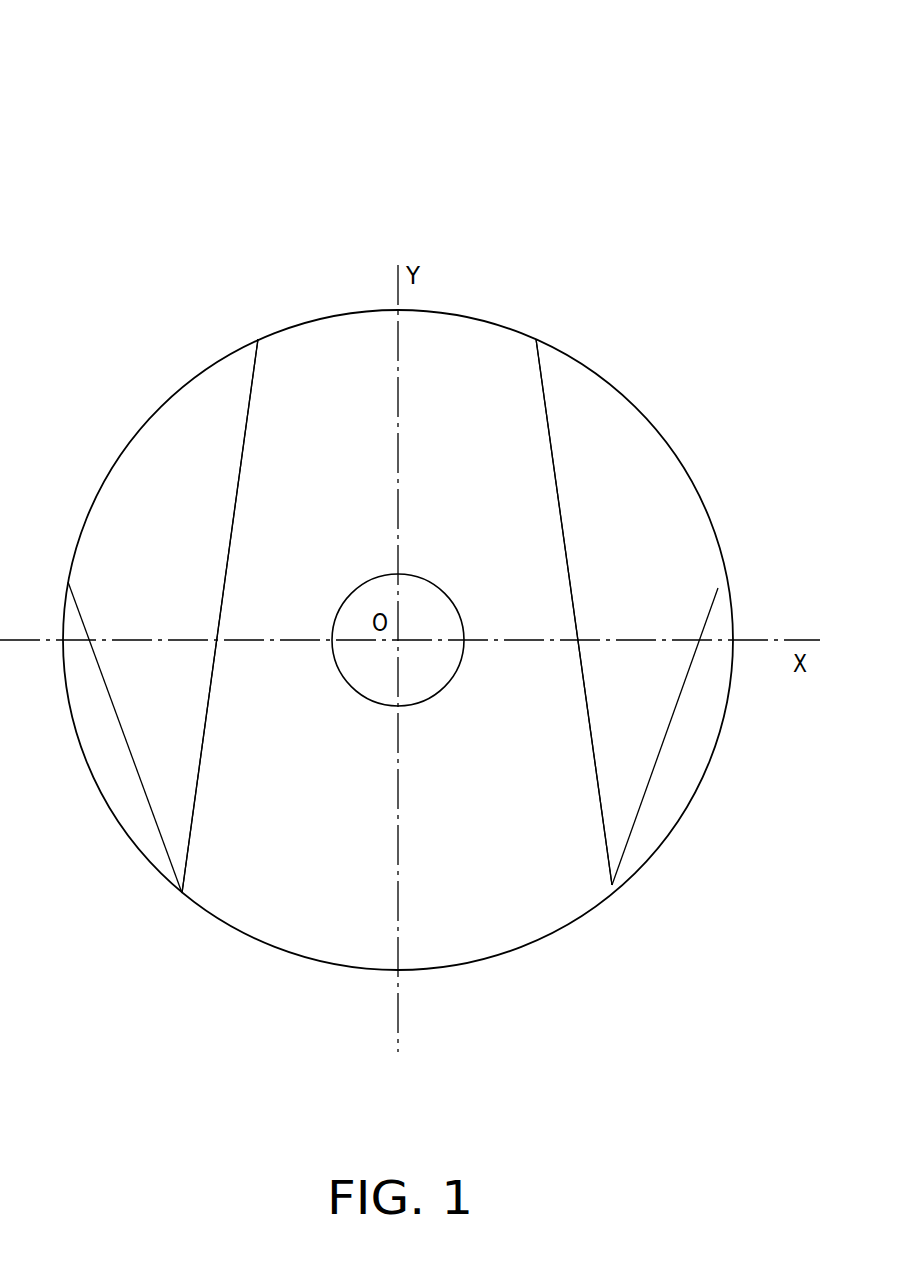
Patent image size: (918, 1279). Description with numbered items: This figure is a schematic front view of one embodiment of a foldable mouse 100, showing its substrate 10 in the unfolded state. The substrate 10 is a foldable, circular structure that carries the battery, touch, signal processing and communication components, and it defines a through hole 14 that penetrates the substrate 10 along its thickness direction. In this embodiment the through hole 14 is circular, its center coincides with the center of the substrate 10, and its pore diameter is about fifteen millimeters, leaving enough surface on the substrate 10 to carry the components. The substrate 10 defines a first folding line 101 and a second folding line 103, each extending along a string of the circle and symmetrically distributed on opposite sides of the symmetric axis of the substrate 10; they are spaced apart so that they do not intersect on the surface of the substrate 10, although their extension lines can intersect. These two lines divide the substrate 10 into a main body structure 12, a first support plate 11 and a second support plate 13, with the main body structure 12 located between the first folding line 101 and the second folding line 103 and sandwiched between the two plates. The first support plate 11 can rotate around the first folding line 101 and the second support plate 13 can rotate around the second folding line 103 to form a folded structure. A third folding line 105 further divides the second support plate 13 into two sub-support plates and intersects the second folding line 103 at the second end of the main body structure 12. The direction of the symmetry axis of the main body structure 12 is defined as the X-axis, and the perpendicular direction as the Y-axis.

The foldable mouse 100 is at (216, 30).
The substrate 10 is at (542, 128).
The first support plate 11 is at (232, 376).
The main body structure 12 is at (345, 340).
The second support plate 13 is at (583, 398).
The first folding line 101 is at (240, 470).
The second folding line 103 is at (557, 509).
The third folding line 105 is at (668, 732).
The through hole 14 is at (417, 660).